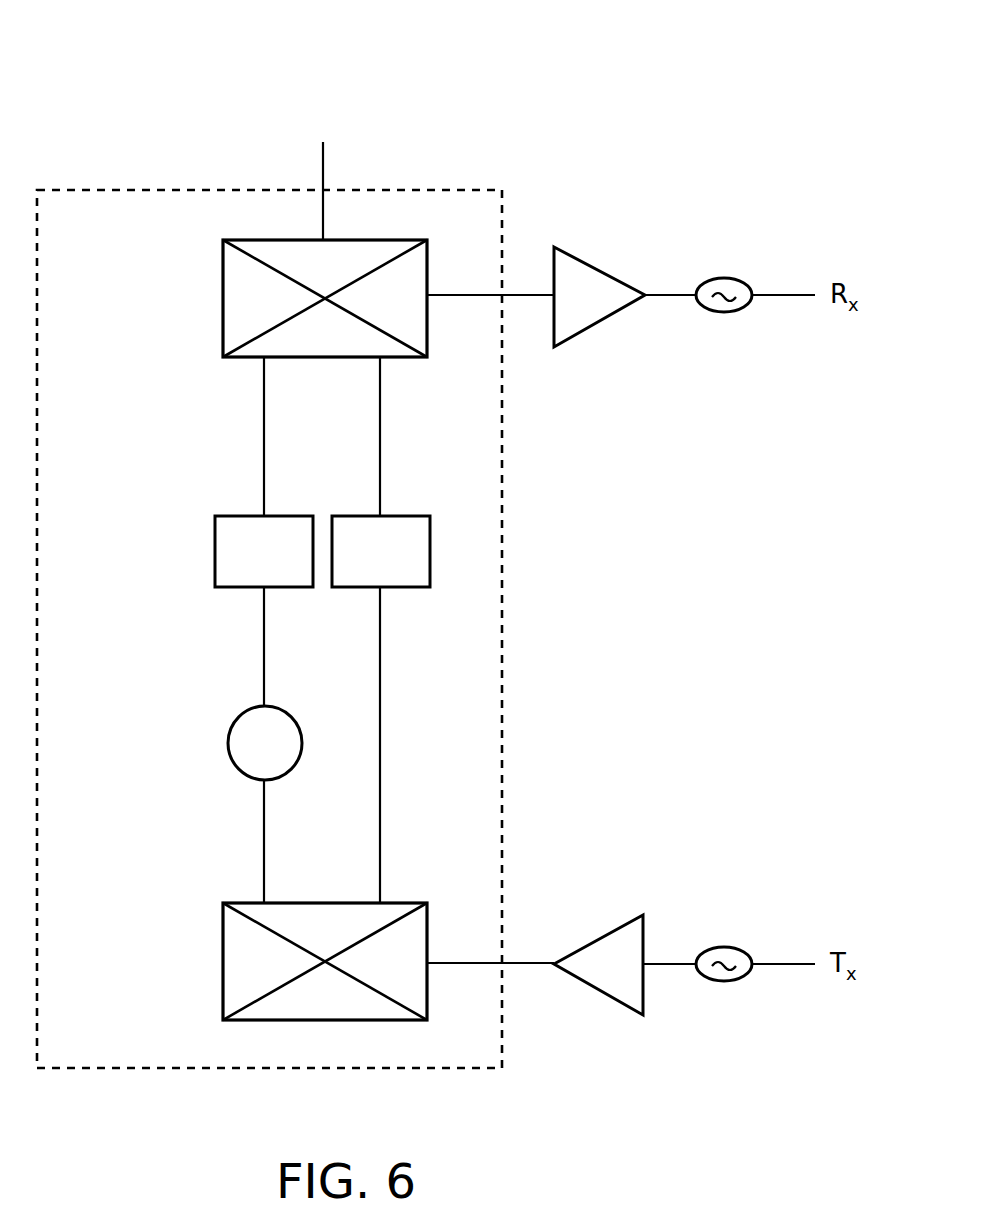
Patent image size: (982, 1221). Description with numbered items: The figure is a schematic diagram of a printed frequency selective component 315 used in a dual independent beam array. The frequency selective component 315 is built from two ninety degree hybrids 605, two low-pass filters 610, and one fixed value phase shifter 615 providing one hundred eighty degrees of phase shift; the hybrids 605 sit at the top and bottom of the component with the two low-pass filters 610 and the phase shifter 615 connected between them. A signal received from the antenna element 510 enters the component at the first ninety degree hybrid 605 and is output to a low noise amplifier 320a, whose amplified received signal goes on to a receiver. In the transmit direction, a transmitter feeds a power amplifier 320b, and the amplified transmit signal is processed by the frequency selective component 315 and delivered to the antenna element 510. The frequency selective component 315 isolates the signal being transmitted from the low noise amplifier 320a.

The frequency selective component 315 is at (443, 228).
The antenna element 510 is at (321, 121).
The 90 degree hybrid 605 is at (398, 357).
The low-pass filter 610 is at (238, 516).
The 180 degree fixed value phase shifter 615 is at (278, 708).
The low noise amplifier 320a is at (575, 255).
The power amplifier 320b is at (643, 915).